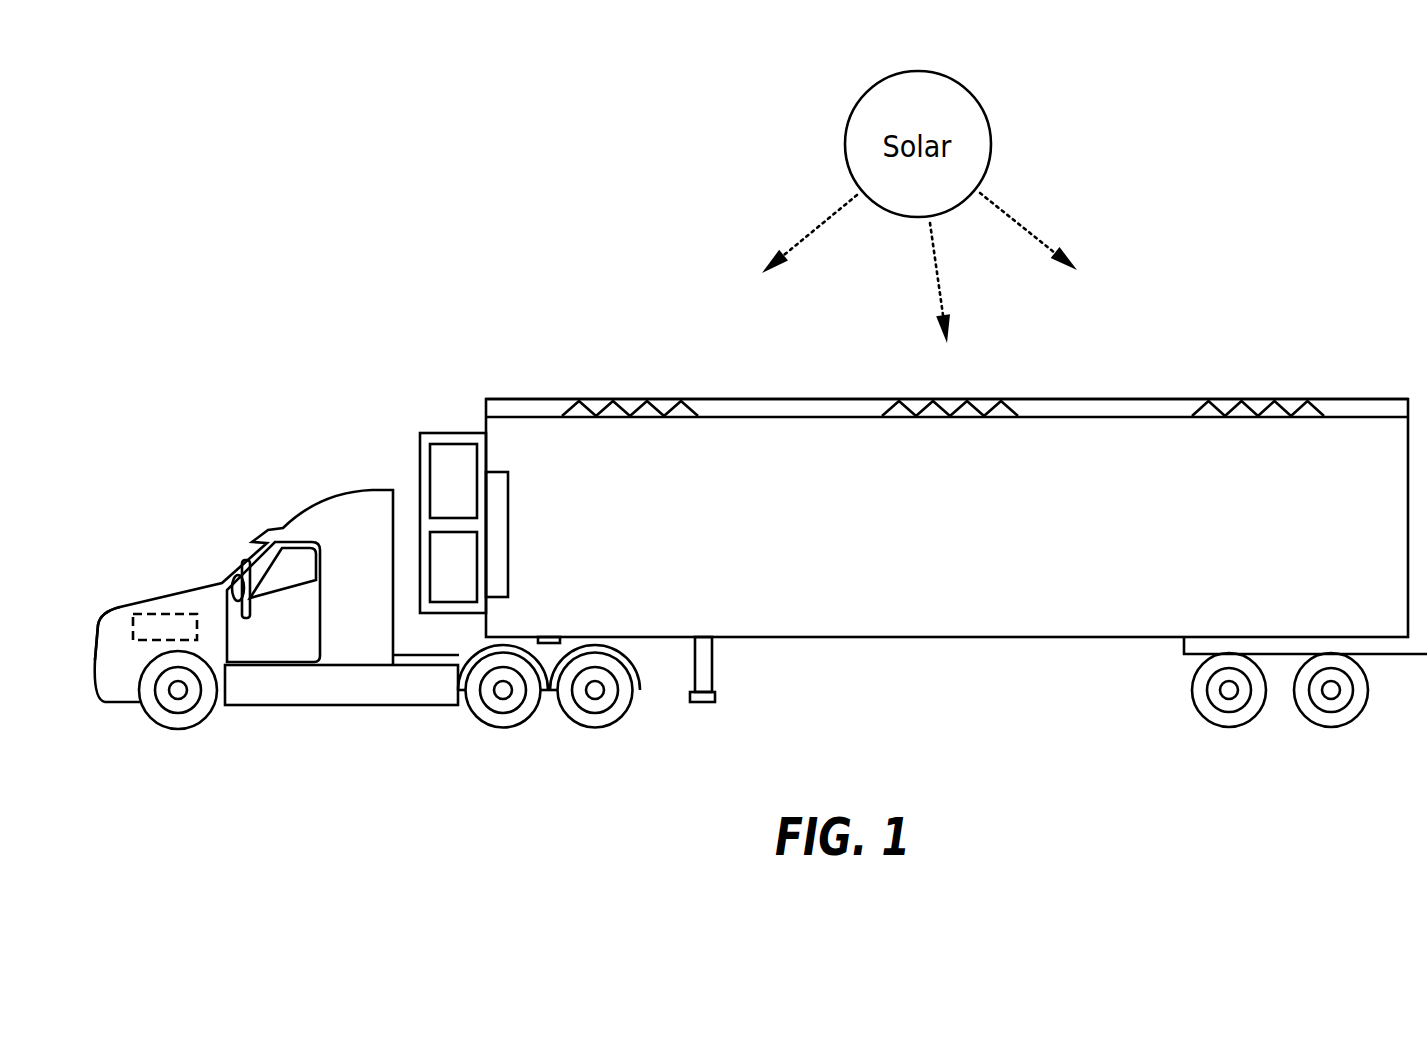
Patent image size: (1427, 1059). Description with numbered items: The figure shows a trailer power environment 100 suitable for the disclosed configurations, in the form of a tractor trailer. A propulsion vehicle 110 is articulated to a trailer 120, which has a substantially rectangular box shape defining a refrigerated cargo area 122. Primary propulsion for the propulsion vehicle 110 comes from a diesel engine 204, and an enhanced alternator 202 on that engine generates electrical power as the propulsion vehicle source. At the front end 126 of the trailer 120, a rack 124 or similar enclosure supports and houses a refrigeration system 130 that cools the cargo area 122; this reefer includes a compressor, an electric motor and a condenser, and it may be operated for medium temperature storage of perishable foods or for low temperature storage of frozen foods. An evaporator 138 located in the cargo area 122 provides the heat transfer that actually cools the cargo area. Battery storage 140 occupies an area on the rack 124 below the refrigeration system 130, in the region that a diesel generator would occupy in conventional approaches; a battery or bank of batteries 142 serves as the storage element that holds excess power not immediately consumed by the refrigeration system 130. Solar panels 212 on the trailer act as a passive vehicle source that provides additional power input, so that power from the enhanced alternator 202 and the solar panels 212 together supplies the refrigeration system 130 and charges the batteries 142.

The trailer power environment 100 is at (439, 251).
The propulsion vehicle 110 is at (290, 517).
The trailer 120 is at (1408, 403).
The refrigerated cargo area 122 is at (970, 550).
The rack 124 is at (422, 433).
The front end 126 is at (523, 372).
The refrigeration system 130 is at (449, 452).
The evaporator 138 is at (508, 533).
The battery storage 140 is at (400, 612).
The bank of batteries 142 is at (452, 585).
The enhanced alternator 202 is at (182, 623).
The diesel engine 204 is at (97, 586).
The solar panels 212 is at (655, 400).